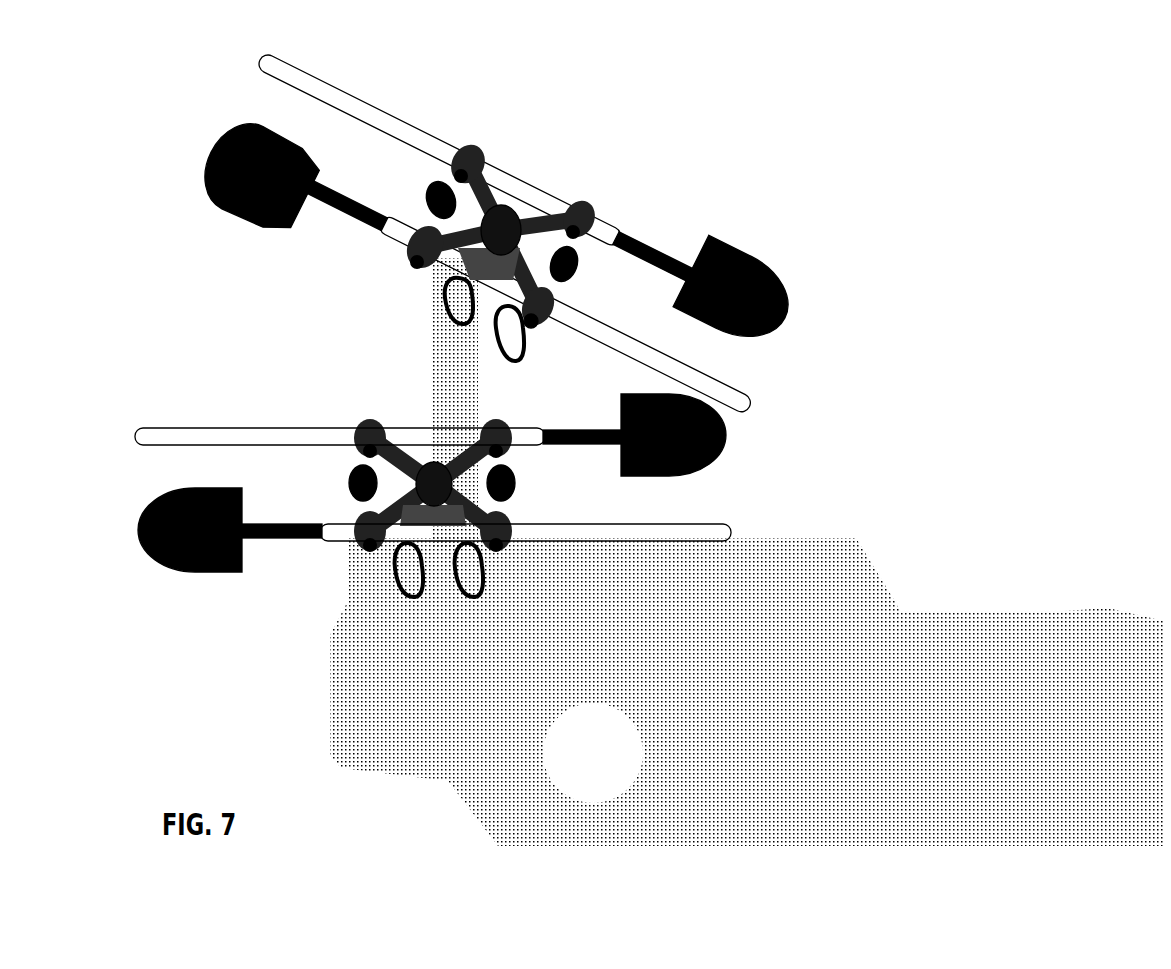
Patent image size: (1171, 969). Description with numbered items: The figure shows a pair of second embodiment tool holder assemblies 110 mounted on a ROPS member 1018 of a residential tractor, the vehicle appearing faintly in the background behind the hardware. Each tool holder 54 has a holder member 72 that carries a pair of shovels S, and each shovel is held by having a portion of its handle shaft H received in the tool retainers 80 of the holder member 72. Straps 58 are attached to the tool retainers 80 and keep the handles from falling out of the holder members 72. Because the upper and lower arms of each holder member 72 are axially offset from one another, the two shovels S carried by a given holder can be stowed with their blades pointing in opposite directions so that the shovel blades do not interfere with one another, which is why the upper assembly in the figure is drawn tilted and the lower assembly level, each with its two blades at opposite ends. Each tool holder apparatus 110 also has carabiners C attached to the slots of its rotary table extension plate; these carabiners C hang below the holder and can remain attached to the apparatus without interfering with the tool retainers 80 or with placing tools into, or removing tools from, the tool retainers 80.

The handle shaft H is at (409, 118).
The shovel S is at (636, 234).
The holder member 72 is at (538, 212).
The tool retainer 80 is at (457, 138).
The strap 58 is at (524, 313).
The tool holder assembly 110 is at (400, 176).
The tool holder 54 is at (581, 256).
The carabiner C is at (442, 317).
The ROPS member 1018 is at (416, 404).